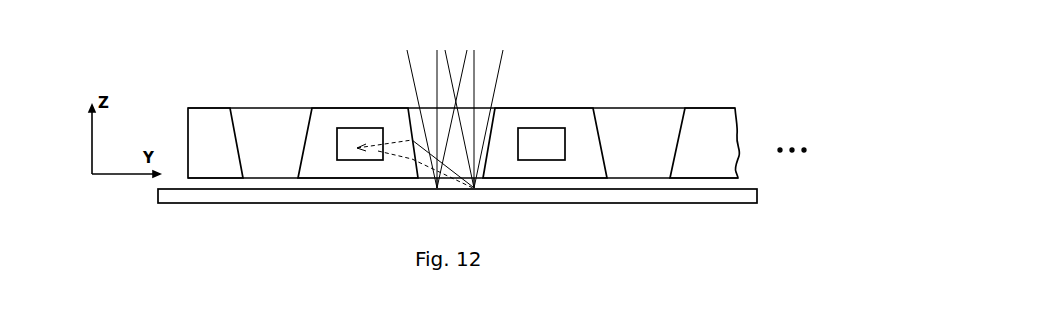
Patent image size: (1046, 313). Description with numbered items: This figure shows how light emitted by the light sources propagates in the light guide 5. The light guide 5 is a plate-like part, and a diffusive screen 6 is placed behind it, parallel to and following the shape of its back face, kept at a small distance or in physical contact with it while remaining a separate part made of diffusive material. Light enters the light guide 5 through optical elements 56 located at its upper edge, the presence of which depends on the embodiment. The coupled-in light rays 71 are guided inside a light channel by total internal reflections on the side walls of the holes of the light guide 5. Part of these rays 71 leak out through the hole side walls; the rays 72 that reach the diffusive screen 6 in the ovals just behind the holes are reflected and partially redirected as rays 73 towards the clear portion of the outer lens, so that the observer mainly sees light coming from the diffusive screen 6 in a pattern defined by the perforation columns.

The light guide 5 is at (715, 127).
The diffusive screen 6 is at (757, 189).
The optical elements 56 is at (355, 147).
The light rays 71 is at (398, 157).
The rays reaching the diffusive screen 72 is at (453, 172).
The redirected rays 73 is at (497, 83).